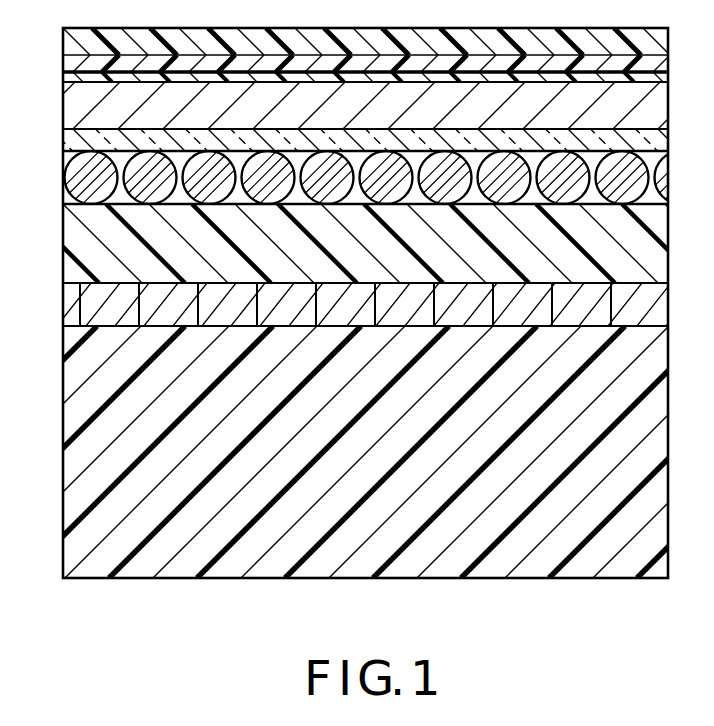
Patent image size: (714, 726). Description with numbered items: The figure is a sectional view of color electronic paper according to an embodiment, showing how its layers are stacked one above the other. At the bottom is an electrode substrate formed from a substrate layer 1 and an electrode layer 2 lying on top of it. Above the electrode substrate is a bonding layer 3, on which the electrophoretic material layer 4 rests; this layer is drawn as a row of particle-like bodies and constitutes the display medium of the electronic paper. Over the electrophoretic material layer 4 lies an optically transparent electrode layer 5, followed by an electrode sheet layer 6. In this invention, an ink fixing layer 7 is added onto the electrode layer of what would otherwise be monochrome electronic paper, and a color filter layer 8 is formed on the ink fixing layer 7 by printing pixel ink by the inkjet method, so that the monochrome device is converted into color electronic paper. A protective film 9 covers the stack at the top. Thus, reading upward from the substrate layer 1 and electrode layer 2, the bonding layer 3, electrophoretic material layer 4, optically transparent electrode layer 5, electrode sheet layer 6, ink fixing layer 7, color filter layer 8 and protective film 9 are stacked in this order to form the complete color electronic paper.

The substrate layer 1 is at (68, 425).
The electrode layer 2 is at (67, 305).
The bonding layer 3 is at (68, 238).
The electrophoretic material layer 4 is at (68, 180).
The optically transparent electrode layer 5 is at (70, 140).
The electrode sheet layer 6 is at (69, 107).
The ink fixing layer 7 is at (70, 78).
The color filter layer 8 is at (69, 63).
The protective film 9 is at (69, 45).